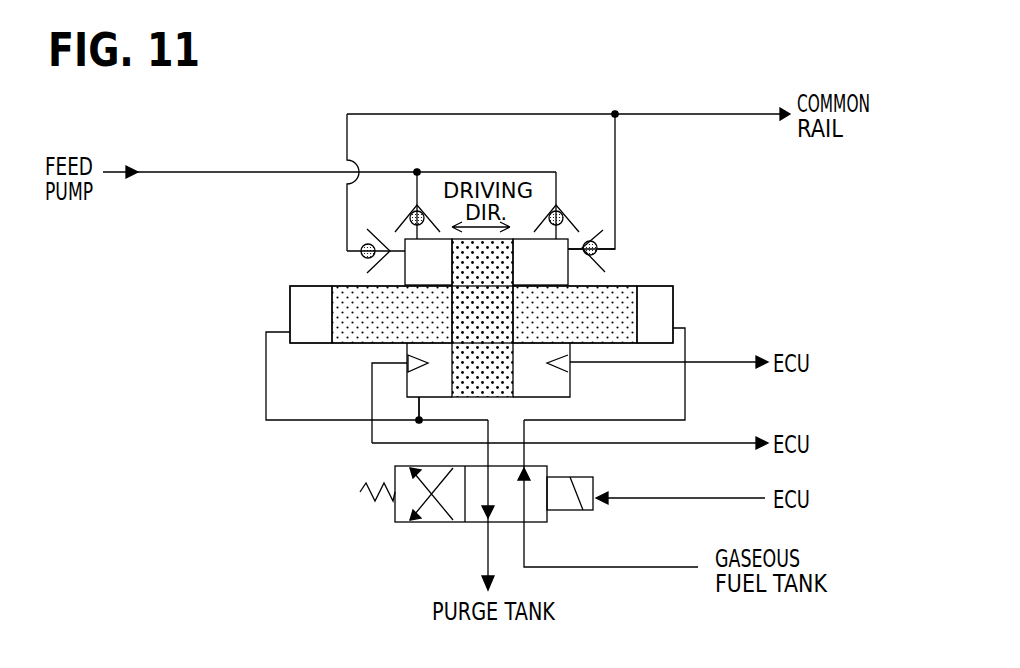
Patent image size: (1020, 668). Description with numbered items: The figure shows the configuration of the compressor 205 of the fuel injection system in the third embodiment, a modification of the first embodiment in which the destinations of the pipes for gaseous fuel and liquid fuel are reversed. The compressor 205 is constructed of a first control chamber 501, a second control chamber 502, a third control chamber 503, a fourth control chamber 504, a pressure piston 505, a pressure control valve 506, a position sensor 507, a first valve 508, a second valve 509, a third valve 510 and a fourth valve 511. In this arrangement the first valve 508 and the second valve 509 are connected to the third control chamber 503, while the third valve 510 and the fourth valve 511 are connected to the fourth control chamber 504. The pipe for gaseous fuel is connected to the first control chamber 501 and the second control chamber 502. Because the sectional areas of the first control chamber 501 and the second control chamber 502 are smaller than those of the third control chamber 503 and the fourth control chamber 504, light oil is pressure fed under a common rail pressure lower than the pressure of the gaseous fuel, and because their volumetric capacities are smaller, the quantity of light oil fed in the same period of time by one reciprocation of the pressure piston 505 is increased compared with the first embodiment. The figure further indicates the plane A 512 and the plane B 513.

The compressor 205 is at (288, 280).
The first control chamber 501 is at (657, 295).
The second control chamber 502 is at (303, 306).
The third control chamber 503 is at (537, 350).
The fourth control chamber 504 is at (420, 385).
The pressure piston 505 is at (615, 302).
The pressure control valve 506 is at (430, 532).
The position sensor 507 is at (547, 364).
The first valve 508 is at (570, 228).
The second valve 509 is at (601, 229).
The third valve 510 is at (430, 205).
The fourth valve 511 is at (361, 256).
The plane A 512 is at (513, 385).
The plane B 513 is at (445, 383).